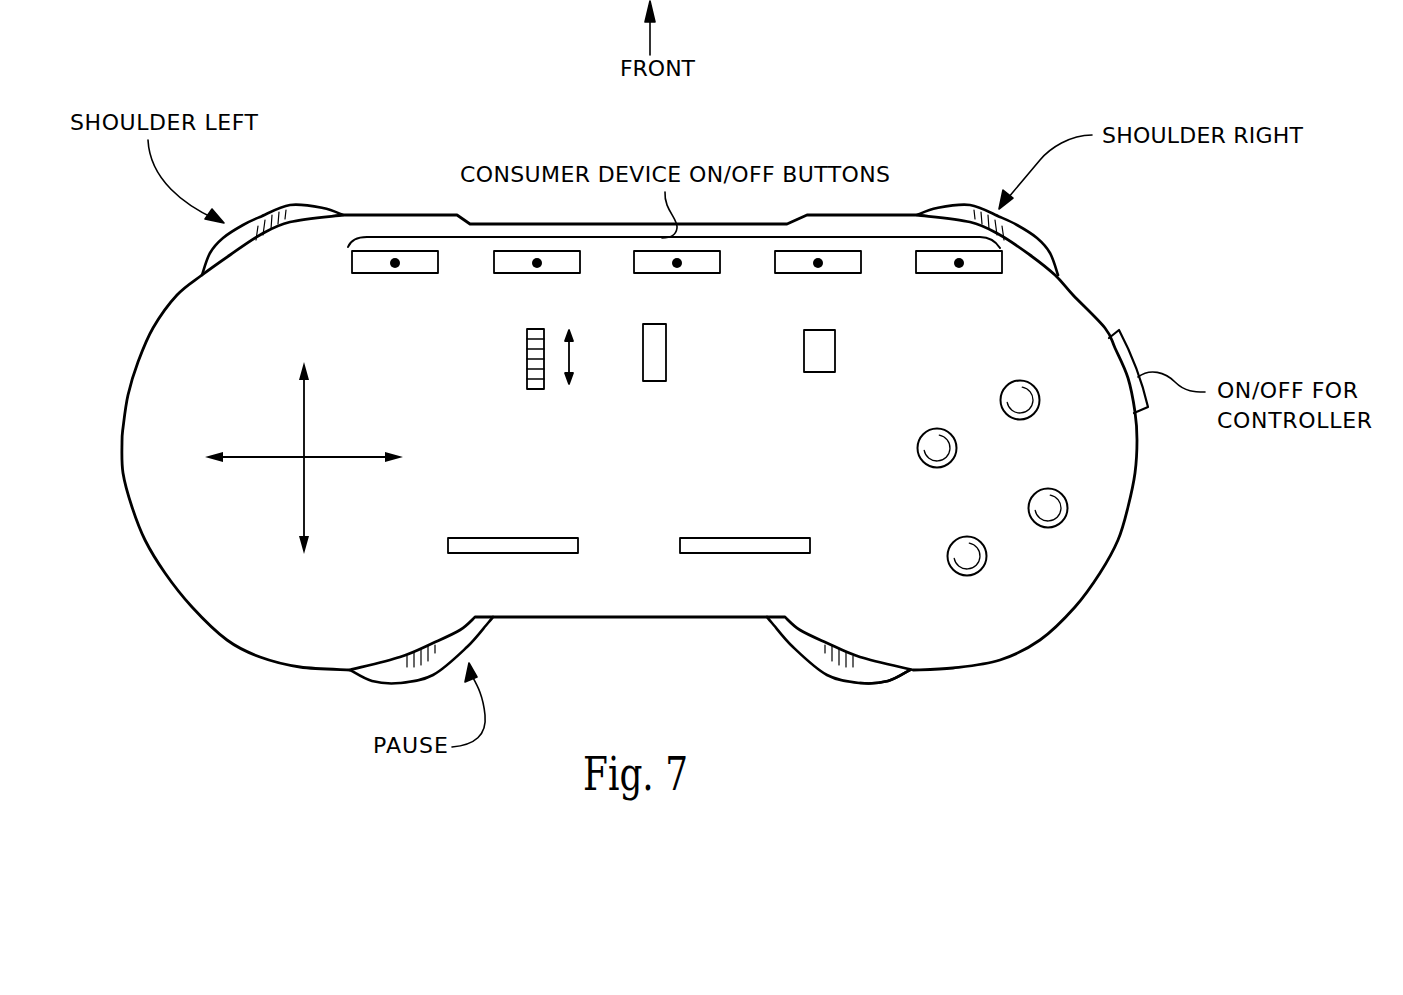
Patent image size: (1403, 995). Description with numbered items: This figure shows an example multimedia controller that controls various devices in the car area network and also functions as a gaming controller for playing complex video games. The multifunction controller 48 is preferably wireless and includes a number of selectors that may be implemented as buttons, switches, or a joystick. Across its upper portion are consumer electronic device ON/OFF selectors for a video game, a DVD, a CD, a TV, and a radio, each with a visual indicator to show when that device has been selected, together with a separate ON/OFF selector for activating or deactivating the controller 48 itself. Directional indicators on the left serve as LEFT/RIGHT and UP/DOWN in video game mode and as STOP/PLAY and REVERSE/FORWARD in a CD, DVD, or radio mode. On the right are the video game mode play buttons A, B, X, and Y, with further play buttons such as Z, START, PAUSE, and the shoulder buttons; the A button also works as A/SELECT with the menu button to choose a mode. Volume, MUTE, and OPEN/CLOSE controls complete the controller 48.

The multifunction controller 48 is at (1020, 59).
The X button X is at (1032, 400).
The Y button Y is at (951, 448).
The A button A is at (1059, 508).
The B button B is at (980, 556).
The Z button Z is at (778, 657).